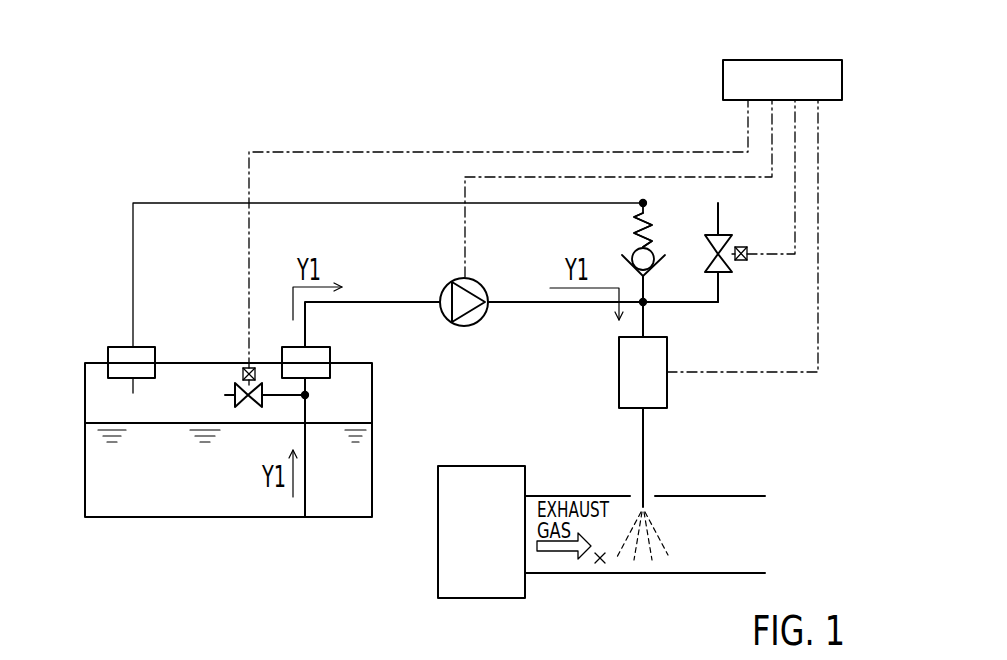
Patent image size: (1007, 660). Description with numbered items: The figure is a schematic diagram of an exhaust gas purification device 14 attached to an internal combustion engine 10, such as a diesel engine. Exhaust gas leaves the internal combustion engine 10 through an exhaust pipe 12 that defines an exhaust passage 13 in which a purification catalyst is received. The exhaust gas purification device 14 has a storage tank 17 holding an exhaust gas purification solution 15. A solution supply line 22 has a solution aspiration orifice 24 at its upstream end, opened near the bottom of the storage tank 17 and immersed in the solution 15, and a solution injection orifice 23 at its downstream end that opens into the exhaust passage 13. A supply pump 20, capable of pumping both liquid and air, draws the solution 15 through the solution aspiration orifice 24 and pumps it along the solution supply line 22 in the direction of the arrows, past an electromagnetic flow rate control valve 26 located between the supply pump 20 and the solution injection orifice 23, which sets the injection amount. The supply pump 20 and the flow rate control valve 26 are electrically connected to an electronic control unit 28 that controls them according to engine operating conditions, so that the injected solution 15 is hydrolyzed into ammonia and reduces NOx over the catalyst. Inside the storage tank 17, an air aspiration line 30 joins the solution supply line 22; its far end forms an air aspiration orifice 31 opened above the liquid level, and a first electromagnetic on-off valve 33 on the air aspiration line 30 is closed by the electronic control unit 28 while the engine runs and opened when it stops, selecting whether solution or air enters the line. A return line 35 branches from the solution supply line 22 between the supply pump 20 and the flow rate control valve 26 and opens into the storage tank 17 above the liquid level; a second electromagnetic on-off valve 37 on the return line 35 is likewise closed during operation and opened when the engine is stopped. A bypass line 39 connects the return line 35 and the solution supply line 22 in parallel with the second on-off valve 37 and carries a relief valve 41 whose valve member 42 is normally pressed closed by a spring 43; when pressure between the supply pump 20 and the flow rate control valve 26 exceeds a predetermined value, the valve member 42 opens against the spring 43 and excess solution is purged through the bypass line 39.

The internal combustion engine 10 is at (480, 480).
The exhaust pipe 12 is at (703, 495).
The exhaust passage 13 is at (601, 565).
The exhaust gas purification device 14 is at (213, 168).
The exhaust gas purification solution 15 is at (190, 489).
The storage tank 17 is at (85, 380).
The supply pump 20 is at (483, 282).
The solution supply line 22 is at (393, 300).
The solution injection orifice 23 is at (645, 507).
The solution aspiration orifice 24 is at (306, 518).
The flow rate control valve 26 is at (617, 362).
The electronic control unit 28 is at (793, 60).
The air aspiration line 30 is at (231, 386).
The air aspiration orifice 31 is at (226, 395).
The first electromagnetic on-off valve 33 is at (260, 382).
The return line 35 is at (131, 241).
The second electromagnetic on-off valve 37 is at (737, 270).
The bypass line 39 is at (650, 297).
The relief valve 41 is at (625, 232).
The valve member 42 is at (649, 257).
The spring 43 is at (645, 235).